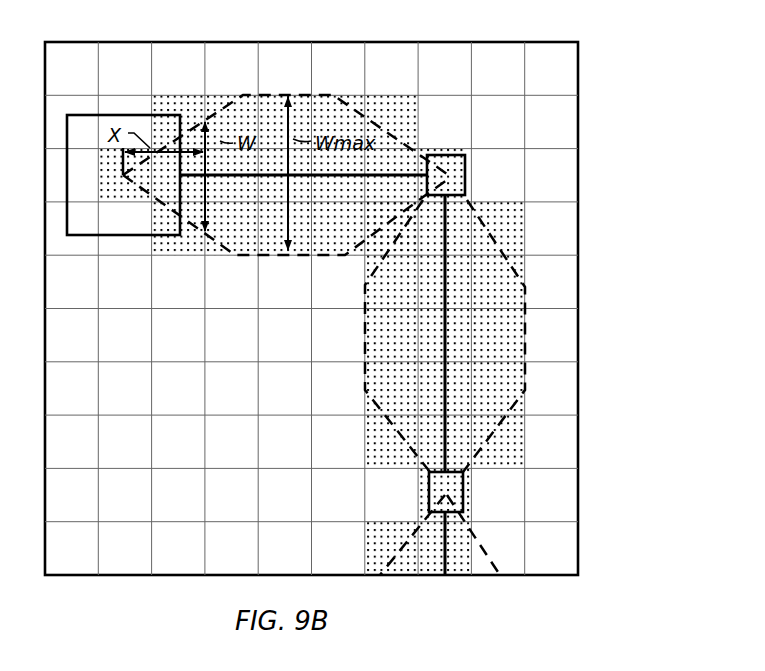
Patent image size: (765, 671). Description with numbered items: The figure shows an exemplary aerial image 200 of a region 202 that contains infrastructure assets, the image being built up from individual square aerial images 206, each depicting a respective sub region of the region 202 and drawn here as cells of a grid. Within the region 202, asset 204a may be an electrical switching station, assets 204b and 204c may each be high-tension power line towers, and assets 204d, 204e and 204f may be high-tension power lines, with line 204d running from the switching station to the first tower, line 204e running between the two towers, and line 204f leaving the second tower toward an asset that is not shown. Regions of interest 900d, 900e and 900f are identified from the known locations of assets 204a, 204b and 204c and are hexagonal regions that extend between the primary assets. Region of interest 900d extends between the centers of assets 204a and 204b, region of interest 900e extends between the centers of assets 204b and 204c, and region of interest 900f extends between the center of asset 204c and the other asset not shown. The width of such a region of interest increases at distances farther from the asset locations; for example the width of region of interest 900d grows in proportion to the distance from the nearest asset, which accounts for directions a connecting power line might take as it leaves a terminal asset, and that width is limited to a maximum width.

The aerial image 200 is at (312, 289).
The region 202 is at (346, 308).
The individual aerial image 206 is at (89, 76).
The asset 204a is at (118, 202).
The asset 204b is at (491, 177).
The asset 204c is at (496, 506).
The asset 204d is at (303, 190).
The asset 204e is at (503, 333).
The asset 204f is at (489, 543).
The region of interest 900d is at (265, 257).
The region of interest 900e is at (365, 362).
The region of interest 900f is at (394, 521).